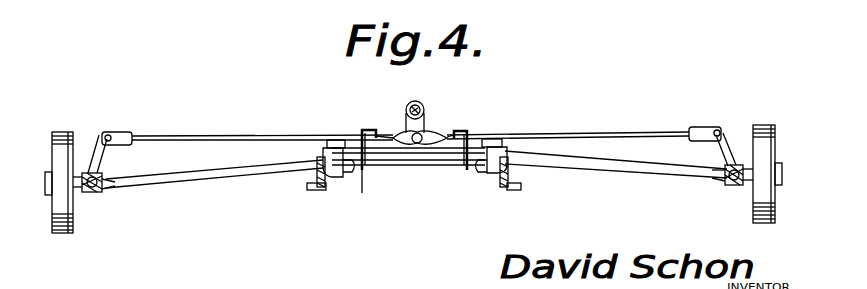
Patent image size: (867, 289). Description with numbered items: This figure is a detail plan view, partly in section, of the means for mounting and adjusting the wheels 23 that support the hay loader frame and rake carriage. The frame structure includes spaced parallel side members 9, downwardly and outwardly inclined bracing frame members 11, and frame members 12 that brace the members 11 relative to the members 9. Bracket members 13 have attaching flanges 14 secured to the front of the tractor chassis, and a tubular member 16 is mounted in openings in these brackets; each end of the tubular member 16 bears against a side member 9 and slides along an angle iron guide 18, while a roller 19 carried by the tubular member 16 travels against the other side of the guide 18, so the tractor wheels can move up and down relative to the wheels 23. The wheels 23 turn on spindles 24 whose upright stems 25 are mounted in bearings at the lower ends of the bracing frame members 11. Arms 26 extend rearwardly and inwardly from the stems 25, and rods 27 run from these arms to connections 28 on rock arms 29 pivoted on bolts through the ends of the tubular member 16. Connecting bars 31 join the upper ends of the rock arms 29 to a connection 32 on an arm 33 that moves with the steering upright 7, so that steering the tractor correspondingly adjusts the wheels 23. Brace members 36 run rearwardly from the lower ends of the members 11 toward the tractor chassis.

The upright 7 is at (422, 105).
The side members 9 is at (314, 191).
The bracing frame members 11 is at (92, 193).
The frame members 12 is at (224, 171).
The bracket members 13 is at (365, 165).
The attaching flanges 14 is at (378, 130).
The tubular member 16 is at (412, 166).
The angle iron guide 18 is at (329, 183).
The roller 19 is at (331, 174).
The wheels 23 is at (62, 133).
The spindles 24 is at (82, 175).
The upright stems 25 is at (116, 184).
The arms 26 is at (108, 158).
The rods 27 is at (238, 136).
The connection 28 is at (349, 139).
The rock arms 29 is at (335, 142).
The connecting bars 31 is at (383, 137).
The connection 32 is at (420, 145).
The arm 33 is at (440, 128).
The brace members 36 is at (625, 167).